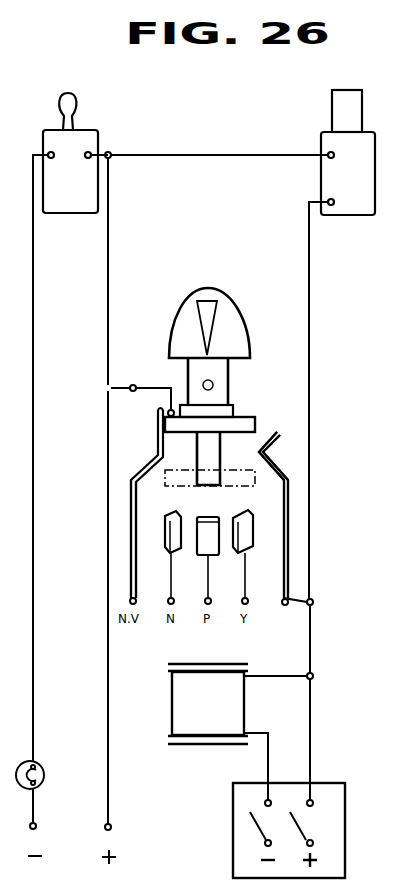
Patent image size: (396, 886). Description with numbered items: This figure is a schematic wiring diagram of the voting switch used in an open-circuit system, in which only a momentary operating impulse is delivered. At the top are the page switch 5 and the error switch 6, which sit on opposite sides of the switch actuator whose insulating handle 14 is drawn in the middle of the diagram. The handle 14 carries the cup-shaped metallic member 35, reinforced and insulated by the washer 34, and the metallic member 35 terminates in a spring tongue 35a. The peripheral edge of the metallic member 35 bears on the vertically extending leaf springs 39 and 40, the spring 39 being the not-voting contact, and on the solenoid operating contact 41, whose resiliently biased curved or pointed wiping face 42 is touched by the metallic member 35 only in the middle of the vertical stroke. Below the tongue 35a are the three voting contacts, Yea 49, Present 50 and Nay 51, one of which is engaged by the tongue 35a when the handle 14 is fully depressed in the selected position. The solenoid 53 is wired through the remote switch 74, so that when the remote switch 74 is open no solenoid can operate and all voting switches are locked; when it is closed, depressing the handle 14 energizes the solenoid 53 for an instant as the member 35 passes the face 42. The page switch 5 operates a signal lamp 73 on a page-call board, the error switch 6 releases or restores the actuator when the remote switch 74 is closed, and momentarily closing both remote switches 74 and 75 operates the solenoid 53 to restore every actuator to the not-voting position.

The page switch 5 is at (77, 108).
The error switch 6 is at (359, 112).
The switch actuator handle 14 is at (228, 322).
The washer 34 is at (231, 411).
The metallic member 35 is at (246, 427).
The spring tongue 35a is at (195, 450).
The not-voting contact leaf spring 39 is at (129, 532).
The leaf spring 40 is at (133, 381).
The solenoid operating contact 41 is at (290, 507).
The wiping face 42 is at (268, 452).
The Yea contact 49 is at (255, 535).
The Present contact 50 is at (210, 525).
The Nay contact 51 is at (171, 540).
The solenoid 53 is at (183, 691).
The signal lamp 73 is at (45, 772).
The remote switch 74 is at (258, 830).
The remote switch 75 is at (303, 828).